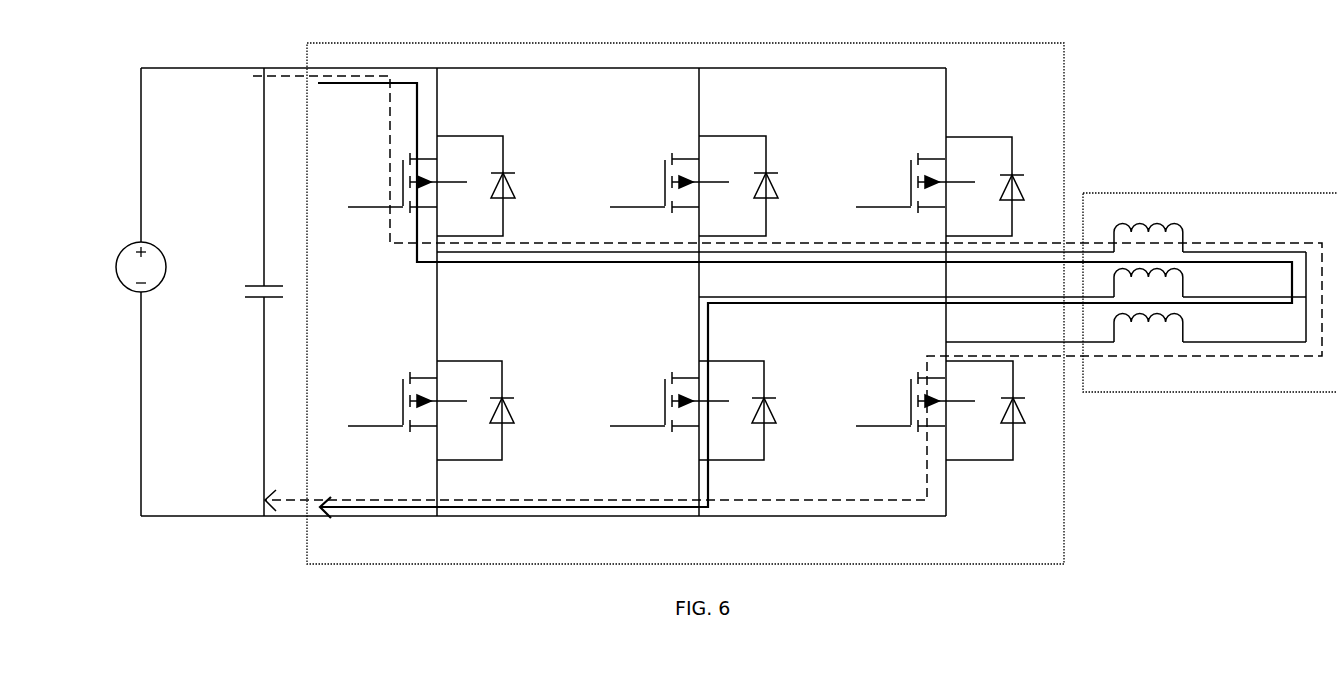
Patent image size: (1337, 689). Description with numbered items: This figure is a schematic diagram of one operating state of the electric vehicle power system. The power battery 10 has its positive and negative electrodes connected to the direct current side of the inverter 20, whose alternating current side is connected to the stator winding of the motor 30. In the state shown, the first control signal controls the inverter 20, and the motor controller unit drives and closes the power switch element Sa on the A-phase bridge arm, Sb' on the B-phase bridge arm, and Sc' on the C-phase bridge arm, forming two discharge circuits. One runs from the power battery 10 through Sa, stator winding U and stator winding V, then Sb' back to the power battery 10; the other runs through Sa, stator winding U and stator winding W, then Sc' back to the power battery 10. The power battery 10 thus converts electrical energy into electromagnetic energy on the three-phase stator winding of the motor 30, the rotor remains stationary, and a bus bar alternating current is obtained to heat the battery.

The power battery 10 is at (128, 268).
The inverter 20 is at (590, 43).
The motor 30 is at (1150, 193).